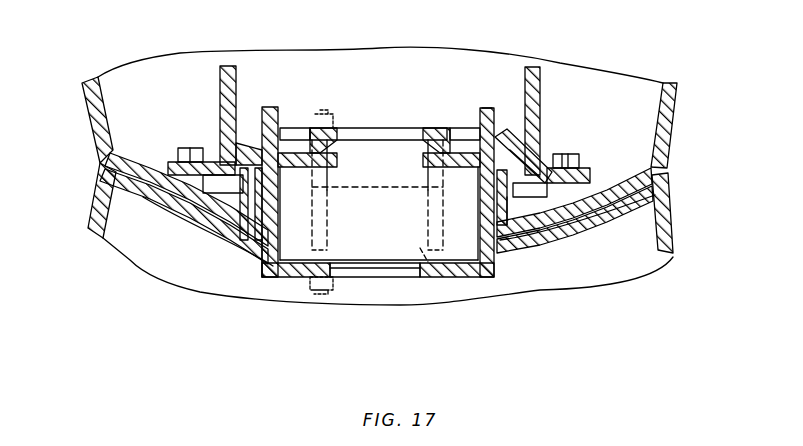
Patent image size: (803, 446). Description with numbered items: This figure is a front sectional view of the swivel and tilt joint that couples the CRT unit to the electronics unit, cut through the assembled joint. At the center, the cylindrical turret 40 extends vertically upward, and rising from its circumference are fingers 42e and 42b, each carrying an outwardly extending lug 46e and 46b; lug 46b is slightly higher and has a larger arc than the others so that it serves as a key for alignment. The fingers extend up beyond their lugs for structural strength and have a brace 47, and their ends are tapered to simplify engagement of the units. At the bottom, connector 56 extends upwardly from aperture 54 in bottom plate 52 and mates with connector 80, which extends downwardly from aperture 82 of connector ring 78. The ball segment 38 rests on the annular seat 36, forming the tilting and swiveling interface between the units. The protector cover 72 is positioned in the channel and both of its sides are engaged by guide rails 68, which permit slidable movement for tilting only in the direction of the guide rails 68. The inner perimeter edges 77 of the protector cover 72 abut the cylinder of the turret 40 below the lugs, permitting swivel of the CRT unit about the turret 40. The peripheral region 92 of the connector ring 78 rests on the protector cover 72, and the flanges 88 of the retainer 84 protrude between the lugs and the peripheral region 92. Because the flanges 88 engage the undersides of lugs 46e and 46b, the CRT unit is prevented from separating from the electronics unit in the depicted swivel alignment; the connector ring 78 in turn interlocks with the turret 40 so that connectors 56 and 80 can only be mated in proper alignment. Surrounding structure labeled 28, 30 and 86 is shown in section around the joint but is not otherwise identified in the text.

The vehicle body 28 is at (90, 203).
The body panel wall 30 is at (107, 163).
The annular seat 36 is at (137, 197).
The ball segment 38 is at (133, 162).
The turret 40 is at (283, 227).
The finger 42e is at (290, 153).
The finger 42b is at (497, 140).
The lug 46e is at (252, 147).
The lug 46b is at (510, 137).
The brace 47 is at (500, 117).
The bottom plate 52 is at (290, 277).
The aperture 54 is at (353, 273).
The connector 56 is at (422, 262).
The guide rails 68 is at (557, 229).
The protector cover 72 is at (497, 217).
The inner perimeter edges 77 is at (280, 207).
The connector ring 78 is at (458, 167).
The connector 80 is at (398, 150).
The aperture 82 is at (345, 132).
The retainer 84 is at (543, 90).
The upper right flange 86 is at (583, 167).
The flanges 88 is at (510, 150).
The peripheral region 92 is at (220, 140).